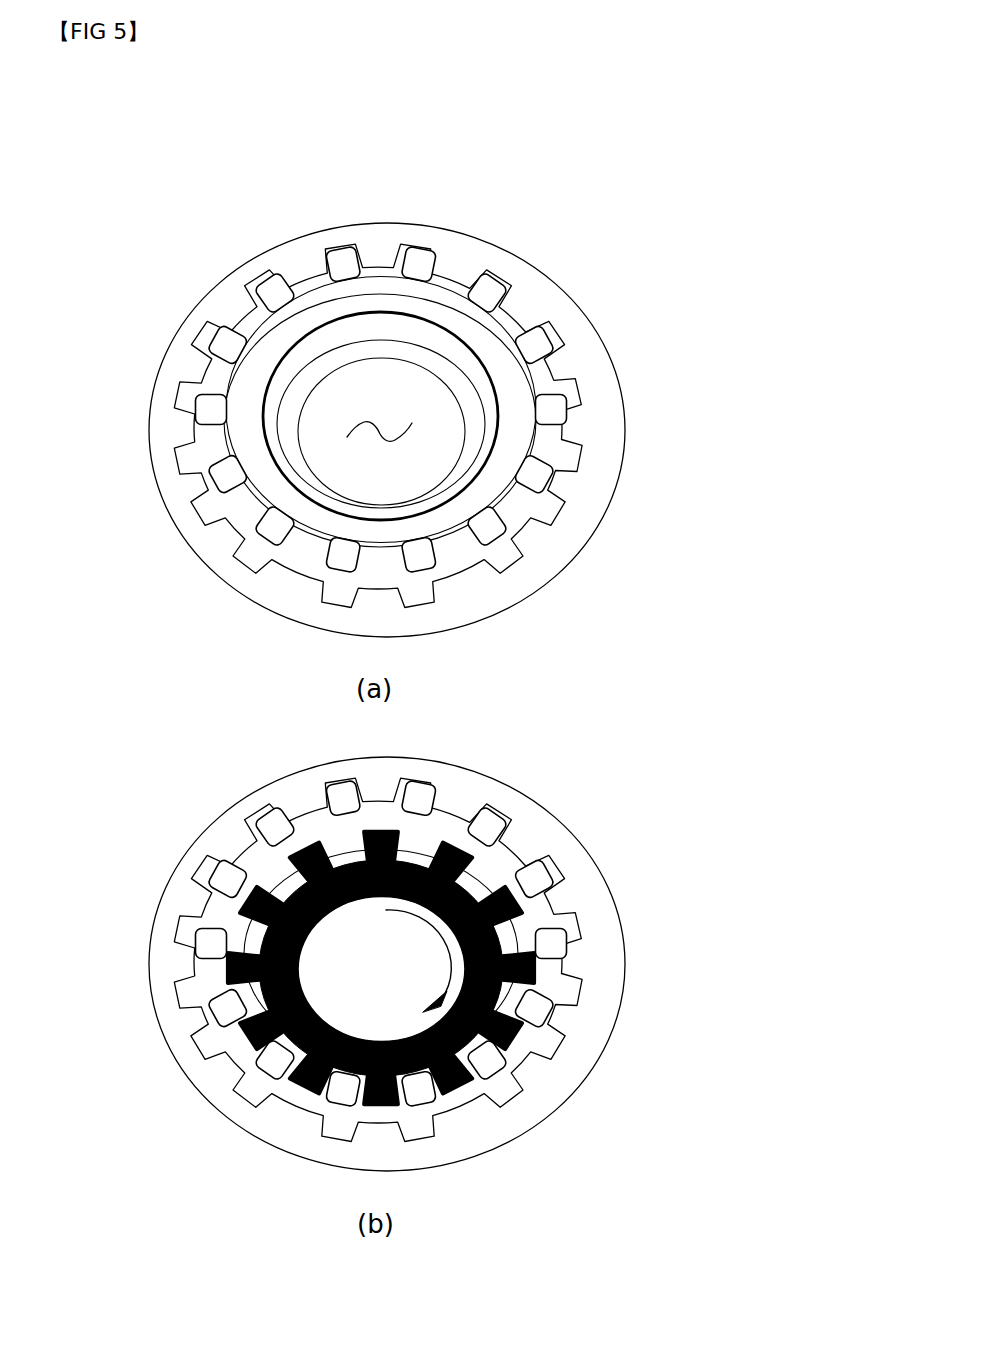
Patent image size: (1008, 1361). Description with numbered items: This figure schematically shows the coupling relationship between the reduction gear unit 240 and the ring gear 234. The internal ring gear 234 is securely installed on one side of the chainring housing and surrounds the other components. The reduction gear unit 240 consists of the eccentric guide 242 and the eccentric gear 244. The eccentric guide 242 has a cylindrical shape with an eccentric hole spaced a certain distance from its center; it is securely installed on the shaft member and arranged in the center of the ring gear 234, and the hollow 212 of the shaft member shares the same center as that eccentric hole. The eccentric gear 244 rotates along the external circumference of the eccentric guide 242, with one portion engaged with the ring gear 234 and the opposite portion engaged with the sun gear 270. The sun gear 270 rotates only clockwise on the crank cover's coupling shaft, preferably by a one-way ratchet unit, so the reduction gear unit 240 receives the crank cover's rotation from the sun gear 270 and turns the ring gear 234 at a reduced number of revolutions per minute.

The hollow 212 is at (373, 413).
The internal ring gear 234 is at (573, 363).
The reduction gear unit 240 is at (524, 140).
The eccentric guide 242 is at (383, 323).
The eccentric gear 244 is at (452, 312).
The sun gear 270 is at (522, 1038).